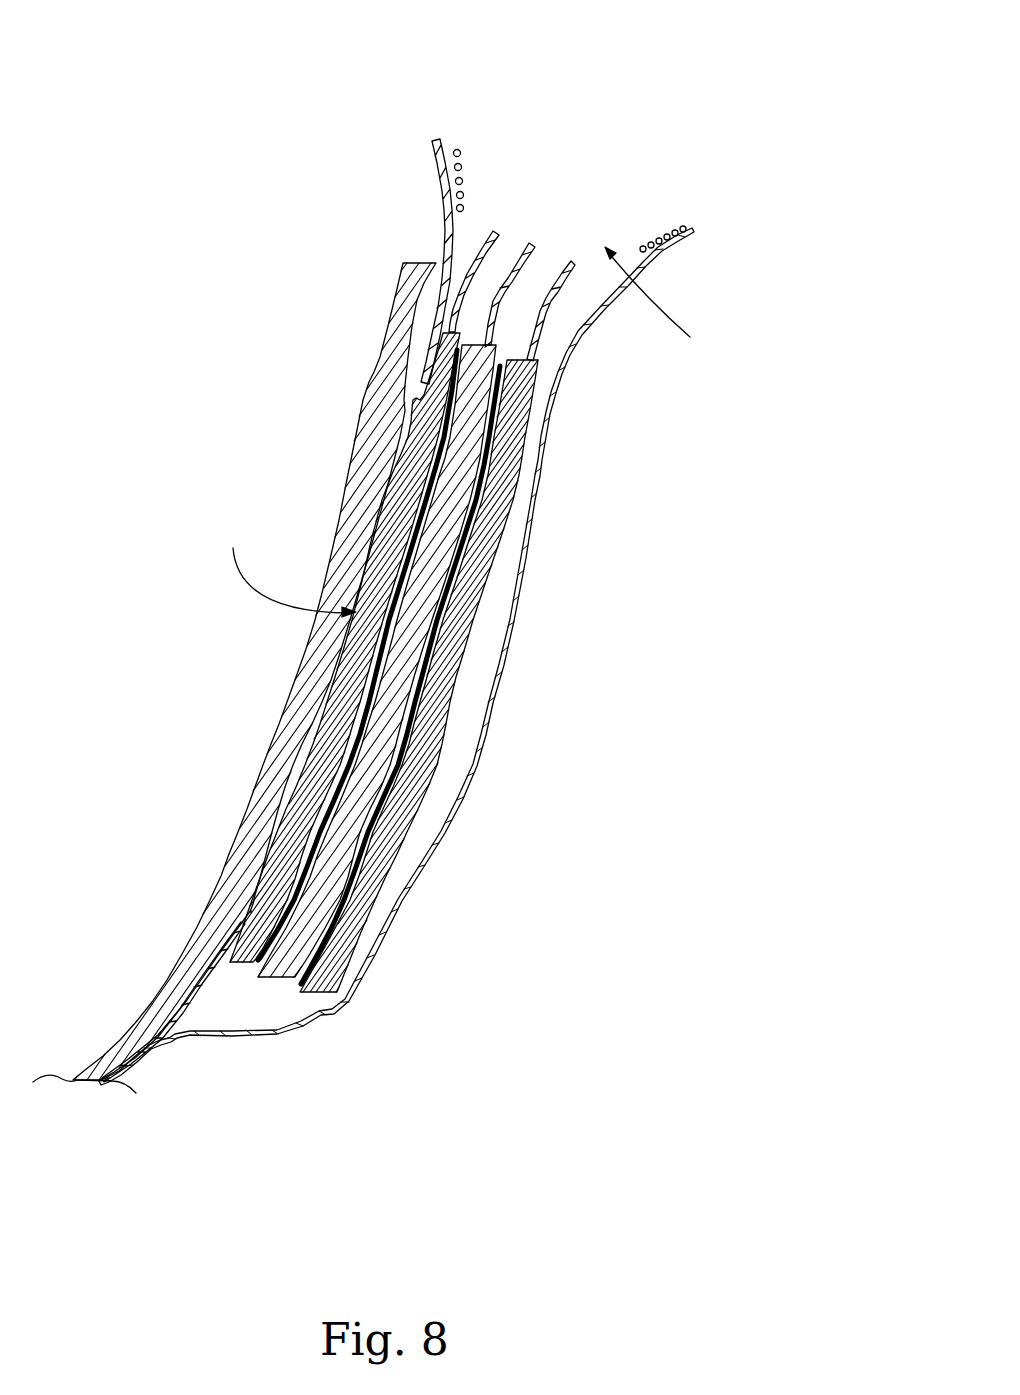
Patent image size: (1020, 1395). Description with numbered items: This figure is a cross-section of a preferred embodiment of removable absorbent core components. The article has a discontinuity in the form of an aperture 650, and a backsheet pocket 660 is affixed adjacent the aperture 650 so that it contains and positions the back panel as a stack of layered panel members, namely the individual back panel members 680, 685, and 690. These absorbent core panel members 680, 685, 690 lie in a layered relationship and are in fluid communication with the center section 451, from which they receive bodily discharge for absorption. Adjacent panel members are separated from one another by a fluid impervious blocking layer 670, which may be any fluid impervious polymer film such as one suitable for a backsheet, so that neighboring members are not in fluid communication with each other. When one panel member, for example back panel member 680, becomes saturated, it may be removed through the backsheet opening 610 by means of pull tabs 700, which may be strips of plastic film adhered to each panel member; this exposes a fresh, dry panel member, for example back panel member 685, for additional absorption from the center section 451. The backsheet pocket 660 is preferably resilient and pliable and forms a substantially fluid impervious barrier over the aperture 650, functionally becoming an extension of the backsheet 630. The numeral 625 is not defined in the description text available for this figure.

The center section 451 is at (377, 435).
The retention barbs 625 is at (663, 232).
The pull tabs 700 is at (572, 260).
The backsheet opening 610 is at (672, 300).
The back panel member 680 is at (432, 406).
The back panel member 685 is at (450, 496).
The back panel member 690 is at (468, 582).
The aperture 650 is at (283, 566).
The backsheet pocket 660 is at (503, 694).
The fluid impervious blocking layer 670 is at (340, 784).
The backsheet 630 is at (142, 1062).